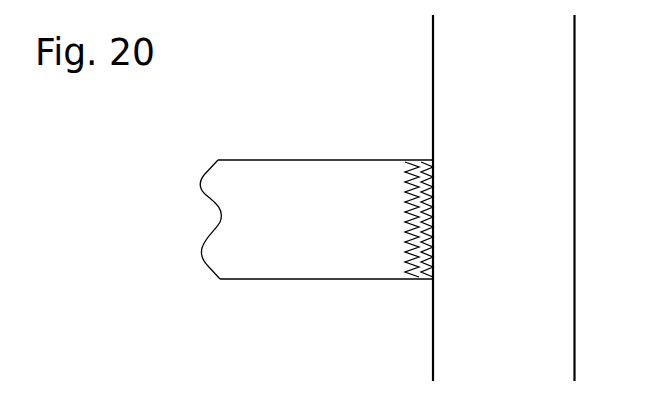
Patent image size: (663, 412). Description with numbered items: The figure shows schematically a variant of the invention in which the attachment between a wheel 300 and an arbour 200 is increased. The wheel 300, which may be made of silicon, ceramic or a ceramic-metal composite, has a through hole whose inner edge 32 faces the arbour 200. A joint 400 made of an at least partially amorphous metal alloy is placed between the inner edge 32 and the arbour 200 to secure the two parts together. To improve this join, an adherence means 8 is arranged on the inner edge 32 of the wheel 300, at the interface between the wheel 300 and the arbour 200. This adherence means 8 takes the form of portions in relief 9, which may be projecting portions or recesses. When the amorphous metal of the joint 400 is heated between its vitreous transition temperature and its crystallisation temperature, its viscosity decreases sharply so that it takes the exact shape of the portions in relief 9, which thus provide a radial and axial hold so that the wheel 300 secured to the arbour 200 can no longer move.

The arbour 200 is at (560, 272).
The wheel 300 is at (288, 260).
The inner edge 32 is at (405, 163).
The joint 400 is at (420, 180).
The portions in relief 9 is at (413, 280).
The adherence means 8 is at (422, 285).